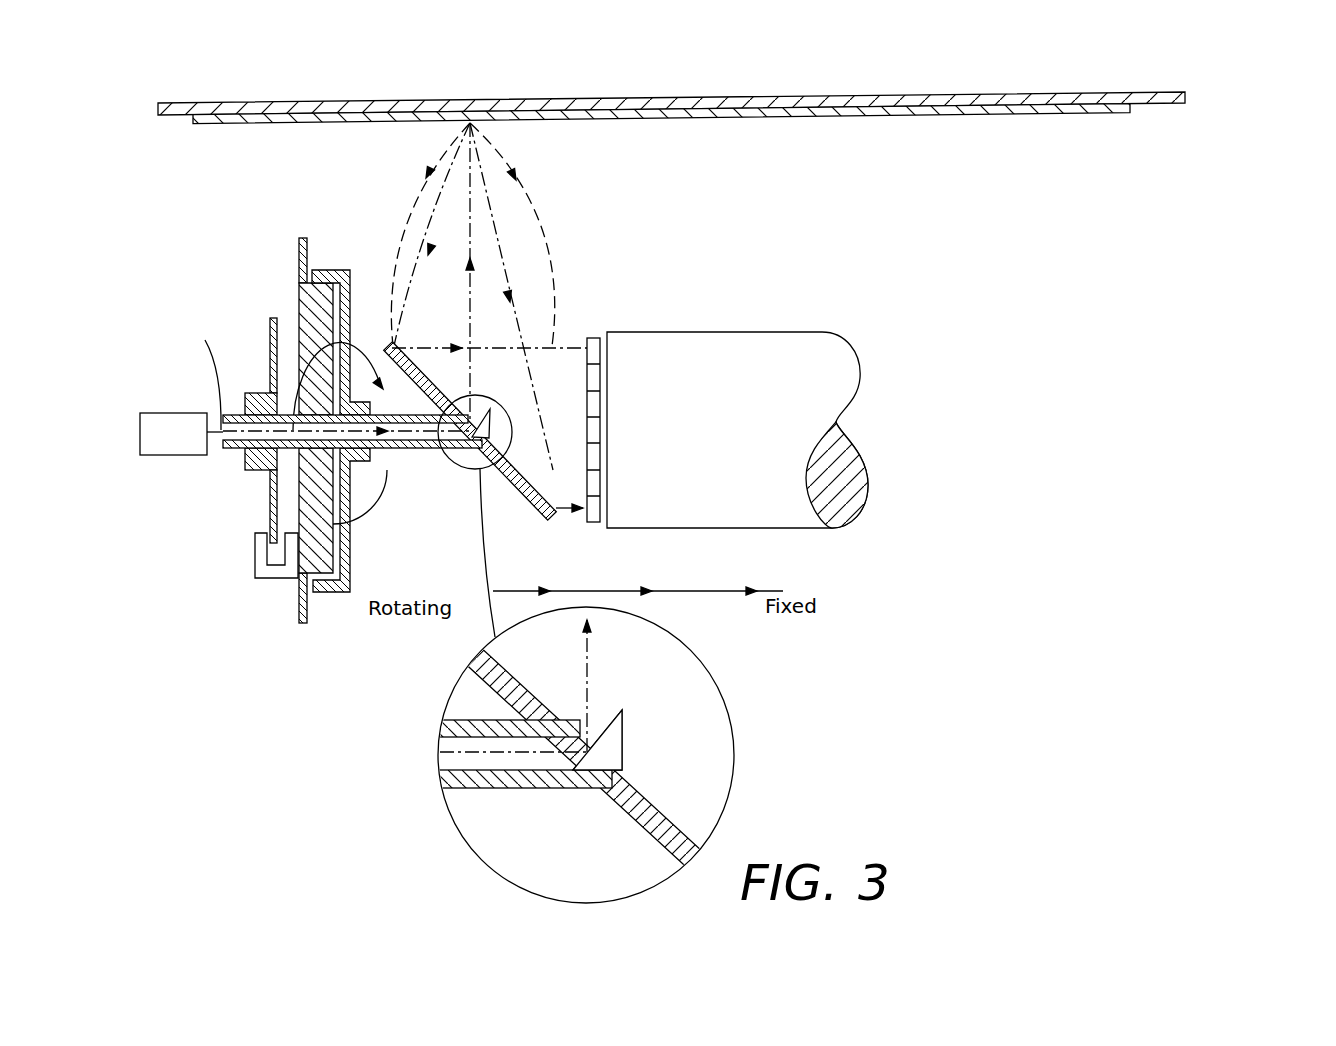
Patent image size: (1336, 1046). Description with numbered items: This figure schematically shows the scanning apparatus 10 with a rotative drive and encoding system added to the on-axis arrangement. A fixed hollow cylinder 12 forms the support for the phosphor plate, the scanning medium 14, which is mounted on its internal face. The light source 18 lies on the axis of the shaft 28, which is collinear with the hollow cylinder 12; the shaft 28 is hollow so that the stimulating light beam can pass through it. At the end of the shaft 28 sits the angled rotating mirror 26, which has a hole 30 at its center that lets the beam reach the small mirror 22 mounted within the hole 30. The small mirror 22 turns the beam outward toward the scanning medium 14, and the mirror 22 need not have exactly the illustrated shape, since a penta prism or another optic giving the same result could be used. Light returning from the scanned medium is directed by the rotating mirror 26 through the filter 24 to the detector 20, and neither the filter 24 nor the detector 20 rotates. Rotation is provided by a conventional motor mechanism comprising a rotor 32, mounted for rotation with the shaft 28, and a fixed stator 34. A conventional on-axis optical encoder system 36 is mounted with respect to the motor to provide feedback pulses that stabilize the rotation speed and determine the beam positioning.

The scanning apparatus 10 is at (1236, 91).
The hollow cylinder 12 is at (1177, 105).
The scanning medium 14 is at (828, 118).
The light source 18 is at (192, 412).
The detector 20 is at (813, 331).
The small mirror 22 is at (488, 417).
The filter 24 is at (593, 337).
The angled rotating mirror 26 is at (556, 520).
The shaft 28 is at (412, 447).
The hole 30 is at (578, 716).
The rotor 32 is at (354, 582).
The stator 34 is at (300, 620).
The on-axis optical encoder system 36 is at (270, 522).